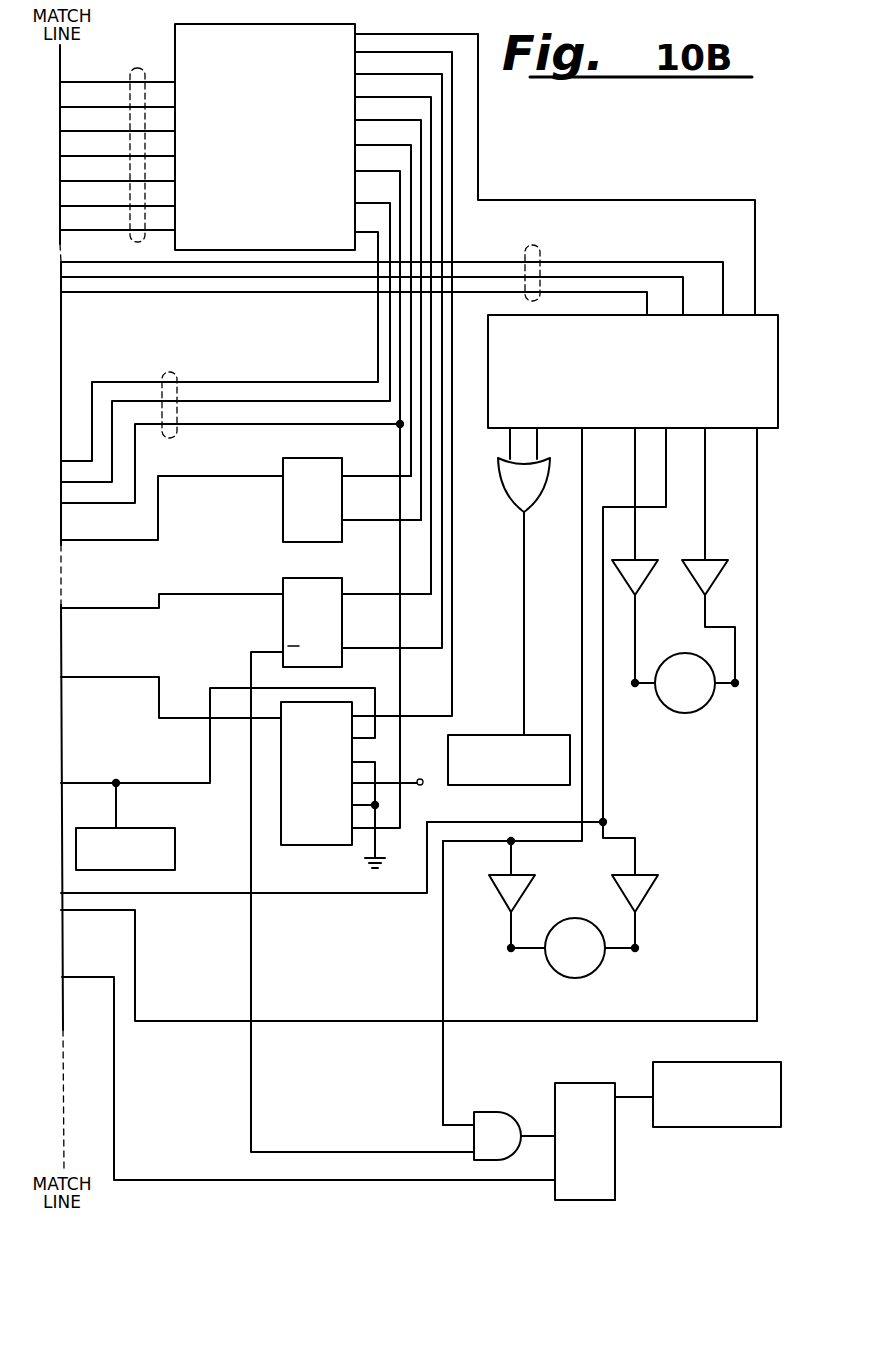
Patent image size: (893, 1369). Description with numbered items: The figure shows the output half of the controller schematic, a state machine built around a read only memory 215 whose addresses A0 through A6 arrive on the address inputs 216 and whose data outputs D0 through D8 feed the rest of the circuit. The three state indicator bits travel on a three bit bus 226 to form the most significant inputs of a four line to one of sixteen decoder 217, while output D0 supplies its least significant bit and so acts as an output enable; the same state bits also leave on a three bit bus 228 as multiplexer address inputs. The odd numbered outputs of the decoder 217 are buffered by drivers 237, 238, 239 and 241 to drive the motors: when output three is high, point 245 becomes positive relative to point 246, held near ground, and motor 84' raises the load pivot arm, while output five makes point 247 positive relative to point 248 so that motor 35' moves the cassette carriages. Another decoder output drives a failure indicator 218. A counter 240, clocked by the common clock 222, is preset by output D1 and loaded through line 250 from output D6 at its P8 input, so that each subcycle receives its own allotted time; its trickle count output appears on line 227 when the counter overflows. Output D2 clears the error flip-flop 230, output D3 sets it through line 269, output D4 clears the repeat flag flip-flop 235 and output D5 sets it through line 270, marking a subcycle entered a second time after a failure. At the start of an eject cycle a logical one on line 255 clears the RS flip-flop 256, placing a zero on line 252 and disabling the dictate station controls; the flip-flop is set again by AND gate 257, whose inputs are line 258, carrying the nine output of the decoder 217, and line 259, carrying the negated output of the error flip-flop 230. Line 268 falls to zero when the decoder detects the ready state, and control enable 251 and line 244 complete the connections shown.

The read only memory 215 is at (358, 25).
The address inputs 216 is at (137, 68).
The four line to one of sixteen decoder 217 is at (510, 315).
The failure indicator 218 is at (485, 735).
The clock 222 is at (175, 850).
The three bit bus 226 is at (533, 245).
The trickle count output line 227 is at (100, 677).
The three bit bus 228 is at (172, 372).
The error flip-flop 230 is at (283, 632).
The repeat flag flip-flop 235 is at (283, 506).
The driver 237 is at (648, 574).
The driver 238 is at (718, 574).
The driver 239 is at (522, 892).
The counter 240 is at (305, 845).
The driver 241 is at (652, 892).
The line 244 is at (338, 893).
The point 245 is at (735, 690).
The point 246 is at (636, 690).
The point 247 is at (635, 956).
The point 248 is at (511, 956).
The line 250 is at (402, 692).
The control enable 251 is at (712, 1127).
The line 252 is at (620, 1097).
The line 255 is at (205, 1180).
The RS flip-flop 256 is at (615, 1182).
The AND gate 257 is at (497, 1112).
The line 258 is at (441, 936).
The line 259 is at (254, 936).
The line 268 is at (215, 1021).
The line 269 is at (372, 594).
The line 270 is at (370, 476).
The motor 84' is at (685, 711).
The motor 35' is at (588, 962).